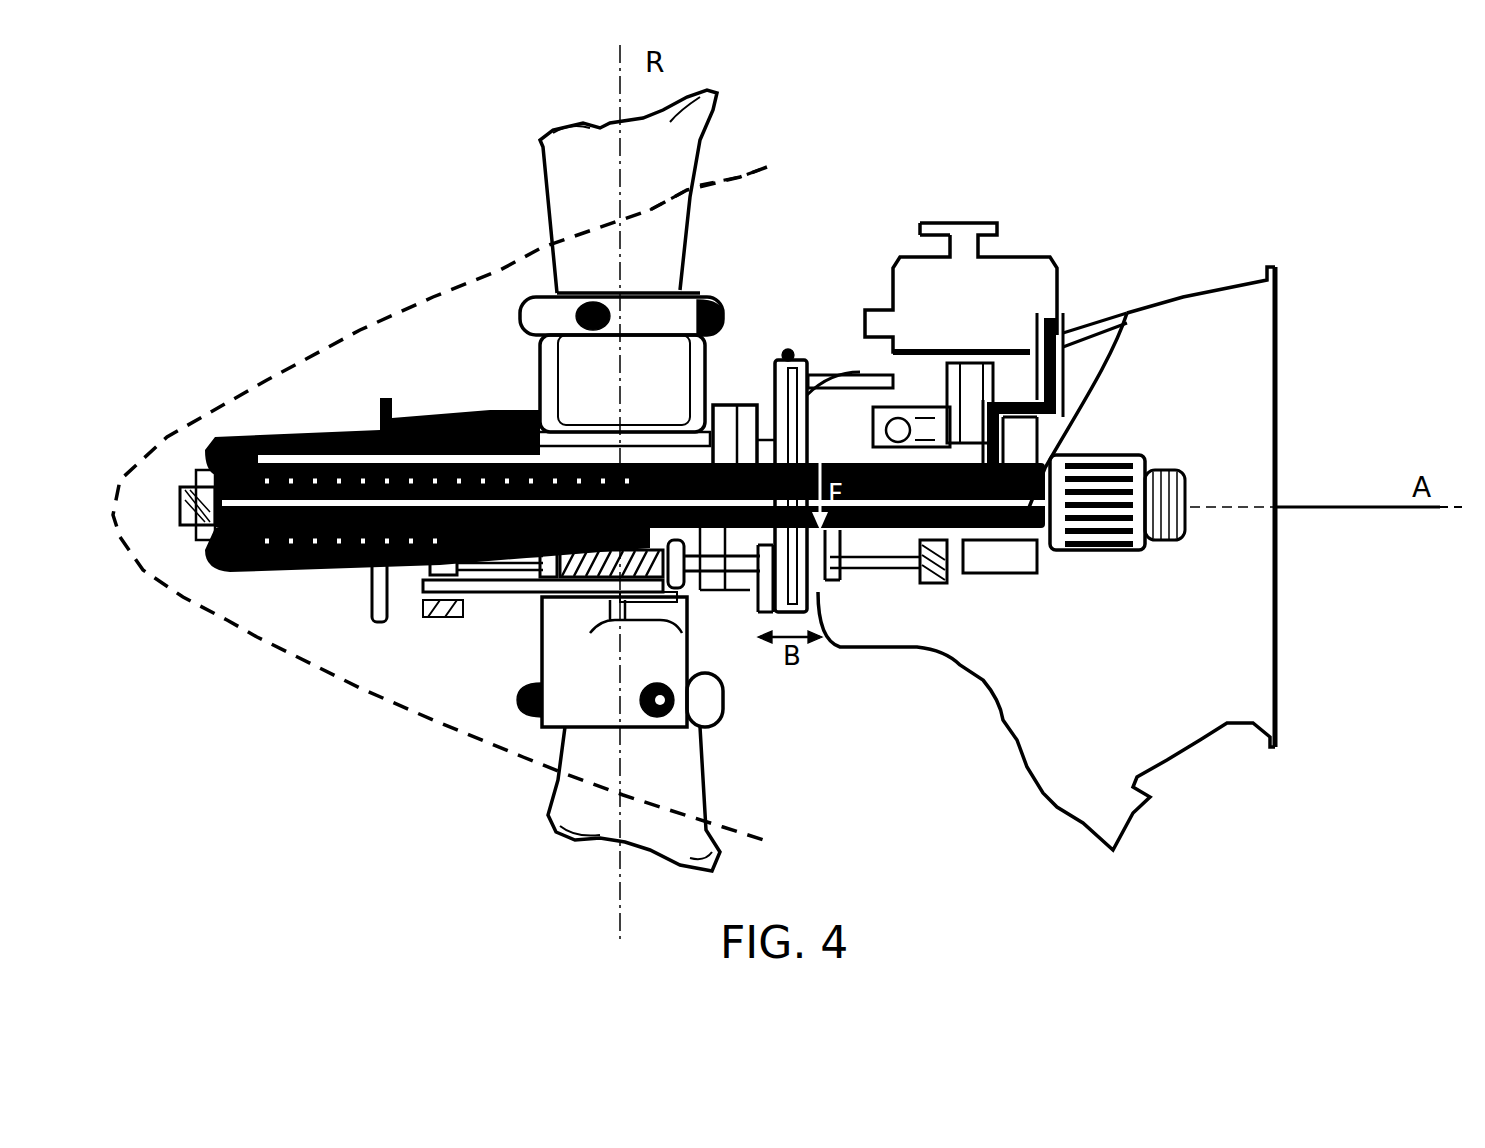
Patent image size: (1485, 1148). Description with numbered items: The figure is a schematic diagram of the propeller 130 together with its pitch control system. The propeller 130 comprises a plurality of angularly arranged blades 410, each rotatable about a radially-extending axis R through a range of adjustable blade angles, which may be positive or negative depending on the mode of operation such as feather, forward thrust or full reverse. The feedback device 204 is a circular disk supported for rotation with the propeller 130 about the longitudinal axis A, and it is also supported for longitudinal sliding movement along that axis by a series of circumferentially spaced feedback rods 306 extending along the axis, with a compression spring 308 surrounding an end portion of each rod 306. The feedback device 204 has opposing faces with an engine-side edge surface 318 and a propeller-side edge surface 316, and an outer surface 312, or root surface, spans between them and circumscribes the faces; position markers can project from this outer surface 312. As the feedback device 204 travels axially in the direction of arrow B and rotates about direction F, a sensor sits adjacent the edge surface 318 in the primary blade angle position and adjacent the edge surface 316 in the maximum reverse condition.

The propeller 130 is at (297, 253).
The blades 410 is at (533, 138).
The feedback device 204 is at (792, 350).
The outer surface 312 is at (778, 445).
The compression spring 308 is at (553, 577).
The feedback rods 306 is at (714, 588).
The edge surface 316 is at (765, 592).
The edge surface 318 is at (820, 595).